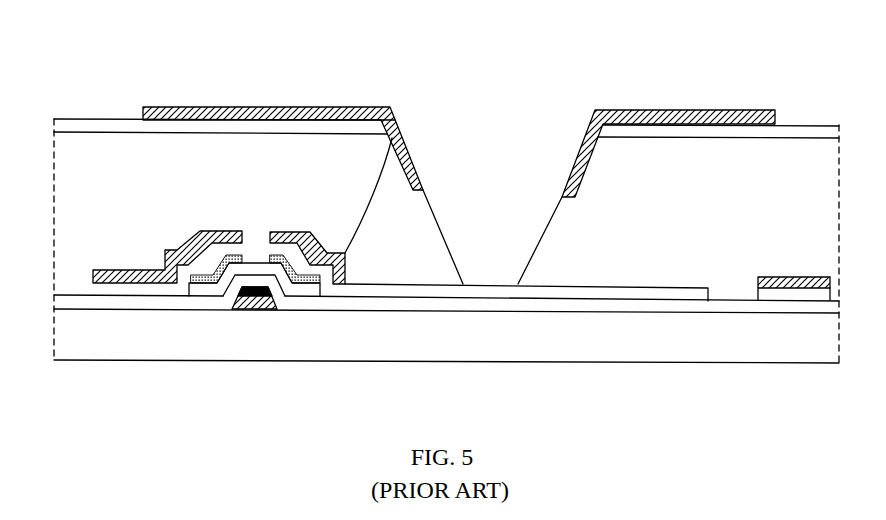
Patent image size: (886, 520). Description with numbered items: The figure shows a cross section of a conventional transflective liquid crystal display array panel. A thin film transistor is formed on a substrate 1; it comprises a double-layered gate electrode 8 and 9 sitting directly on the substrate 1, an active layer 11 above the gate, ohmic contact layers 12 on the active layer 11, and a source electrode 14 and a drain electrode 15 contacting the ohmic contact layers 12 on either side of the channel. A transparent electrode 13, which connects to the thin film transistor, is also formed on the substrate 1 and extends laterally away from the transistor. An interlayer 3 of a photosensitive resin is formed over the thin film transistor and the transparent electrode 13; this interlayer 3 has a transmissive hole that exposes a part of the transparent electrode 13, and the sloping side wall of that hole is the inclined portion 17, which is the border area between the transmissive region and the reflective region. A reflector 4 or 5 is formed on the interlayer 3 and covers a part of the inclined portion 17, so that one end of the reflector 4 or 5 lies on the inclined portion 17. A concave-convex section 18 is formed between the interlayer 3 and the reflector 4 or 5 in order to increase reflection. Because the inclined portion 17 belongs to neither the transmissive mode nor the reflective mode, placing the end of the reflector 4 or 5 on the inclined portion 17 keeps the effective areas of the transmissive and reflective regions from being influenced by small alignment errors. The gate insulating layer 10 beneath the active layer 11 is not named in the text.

The substrate 1 is at (622, 340).
The interlayer 3 is at (805, 155).
The reflector 4 is at (459, 116).
The reflector 5 is at (260, 107).
The gate electrode 8 is at (260, 310).
The gate electrode 9 is at (237, 312).
The gate insulating layer 10 is at (537, 302).
The active layer 11 is at (300, 290).
The ohmic contact layers 12 is at (202, 284).
The transparent electrode 13 is at (432, 286).
The source electrode 14 is at (126, 284).
The drain electrode 15 is at (392, 138).
The inclined portion 17 is at (540, 237).
The concave-convex section 18 is at (98, 128).